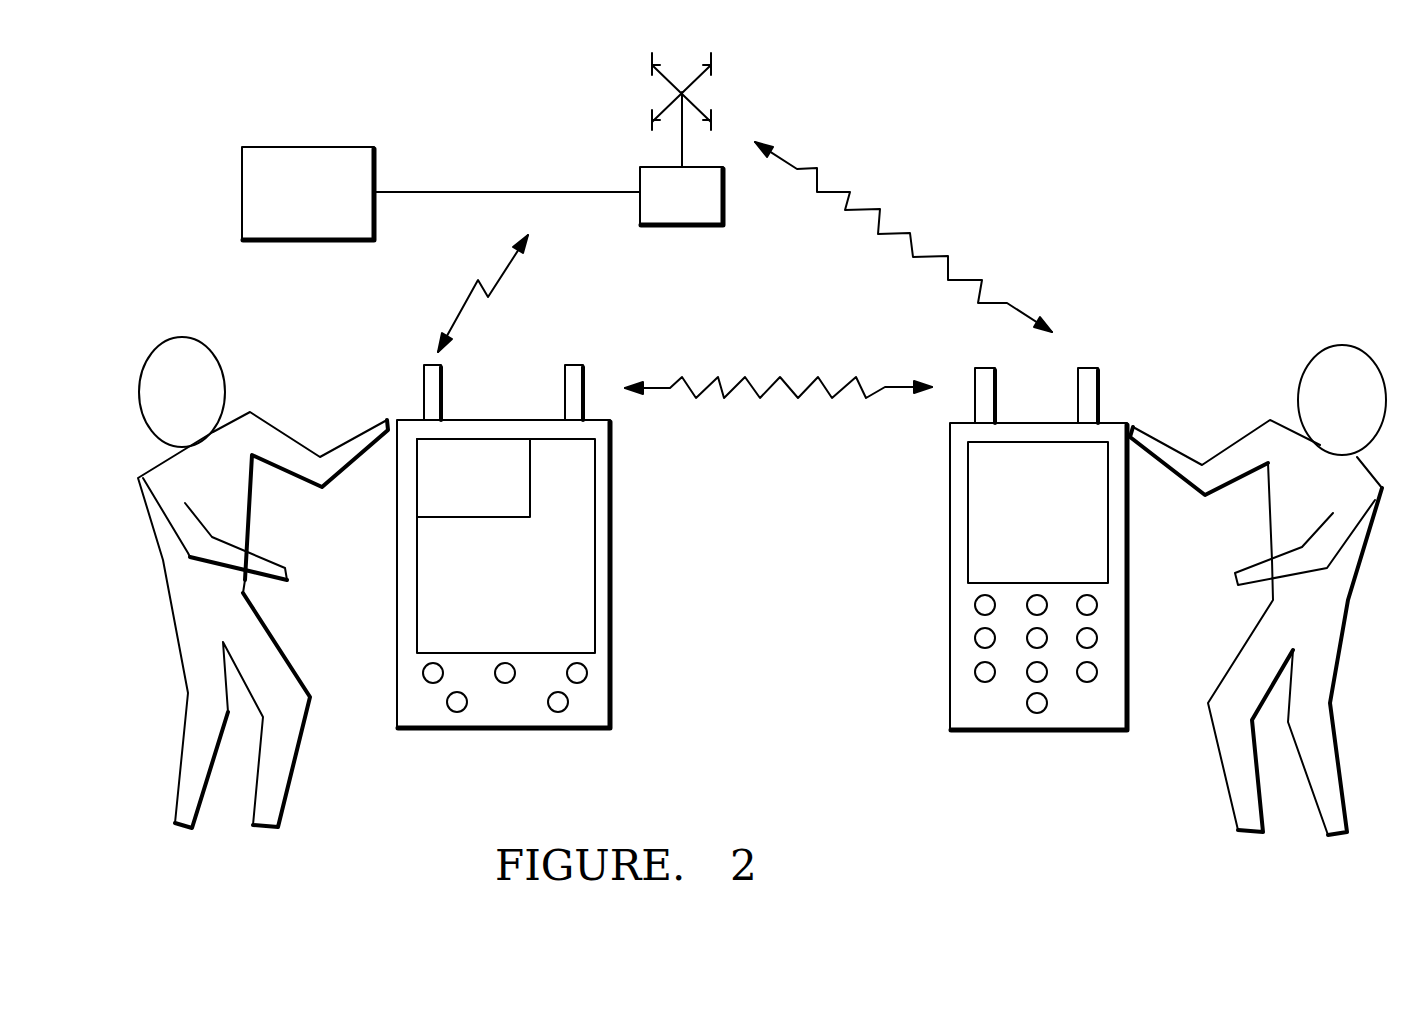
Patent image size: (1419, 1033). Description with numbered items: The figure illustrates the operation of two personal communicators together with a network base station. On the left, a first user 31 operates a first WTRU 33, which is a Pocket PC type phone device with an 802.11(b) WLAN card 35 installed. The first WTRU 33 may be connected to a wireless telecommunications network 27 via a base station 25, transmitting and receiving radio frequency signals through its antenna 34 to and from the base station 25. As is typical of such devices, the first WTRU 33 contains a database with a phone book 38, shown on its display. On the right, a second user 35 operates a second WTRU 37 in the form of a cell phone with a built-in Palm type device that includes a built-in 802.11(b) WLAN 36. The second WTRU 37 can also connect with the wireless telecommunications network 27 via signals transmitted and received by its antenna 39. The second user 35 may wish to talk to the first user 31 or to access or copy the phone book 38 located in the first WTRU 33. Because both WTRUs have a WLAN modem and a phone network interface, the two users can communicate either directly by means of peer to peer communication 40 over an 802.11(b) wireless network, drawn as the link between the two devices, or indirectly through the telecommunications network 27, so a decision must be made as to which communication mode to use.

The base station 25 is at (640, 170).
The wireless telecommunications network 27 is at (291, 204).
The first user 31 is at (272, 632).
The first WTRU 33 is at (610, 597).
The antenna 34 is at (424, 373).
The 802.11(b) WLAN card / second user 35 is at (583, 372).
The built-in 802.11(b) WLAN 36 is at (977, 375).
The second WTRU 37 is at (1078, 732).
The phone book 38 is at (530, 497).
The antenna 39 is at (1098, 372).
The peer to peer communication 40 is at (732, 385).